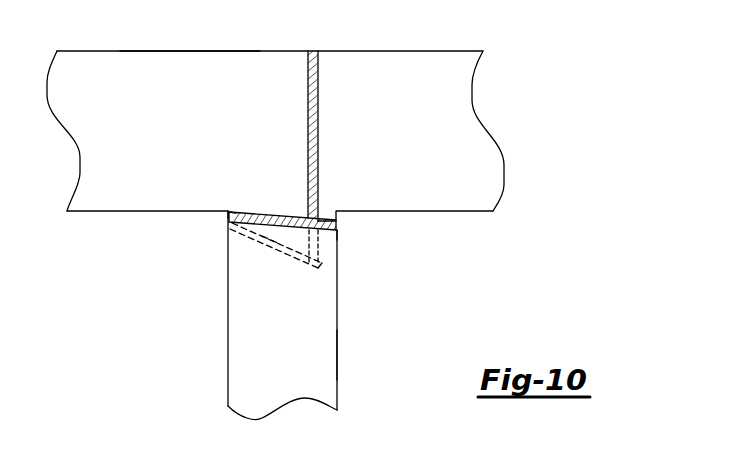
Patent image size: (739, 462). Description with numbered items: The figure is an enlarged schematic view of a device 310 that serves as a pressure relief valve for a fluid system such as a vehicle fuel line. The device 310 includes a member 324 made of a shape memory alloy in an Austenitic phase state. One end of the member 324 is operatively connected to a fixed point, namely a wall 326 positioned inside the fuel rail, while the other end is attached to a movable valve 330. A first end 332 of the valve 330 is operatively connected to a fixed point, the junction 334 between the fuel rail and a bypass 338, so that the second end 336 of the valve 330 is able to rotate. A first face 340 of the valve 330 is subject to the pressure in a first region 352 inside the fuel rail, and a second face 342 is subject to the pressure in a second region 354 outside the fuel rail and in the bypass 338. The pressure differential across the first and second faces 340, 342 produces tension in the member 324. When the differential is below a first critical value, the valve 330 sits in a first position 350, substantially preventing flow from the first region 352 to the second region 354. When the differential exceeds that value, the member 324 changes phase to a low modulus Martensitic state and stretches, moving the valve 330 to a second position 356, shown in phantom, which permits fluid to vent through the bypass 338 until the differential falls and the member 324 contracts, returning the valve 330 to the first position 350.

The device 310 is at (434, 281).
The member 324 is at (318, 80).
The wall 326 is at (202, 54).
The valve 330 is at (258, 212).
The first end 332 is at (233, 213).
The junction 334 is at (228, 214).
The second end 336 is at (325, 210).
The bypass 338 is at (338, 358).
The first face 340 is at (293, 211).
The second face 342 is at (287, 232).
The first position 350 is at (338, 231).
The first region 352 is at (410, 146).
The second region 354 is at (289, 340).
The second position 356 is at (270, 247).